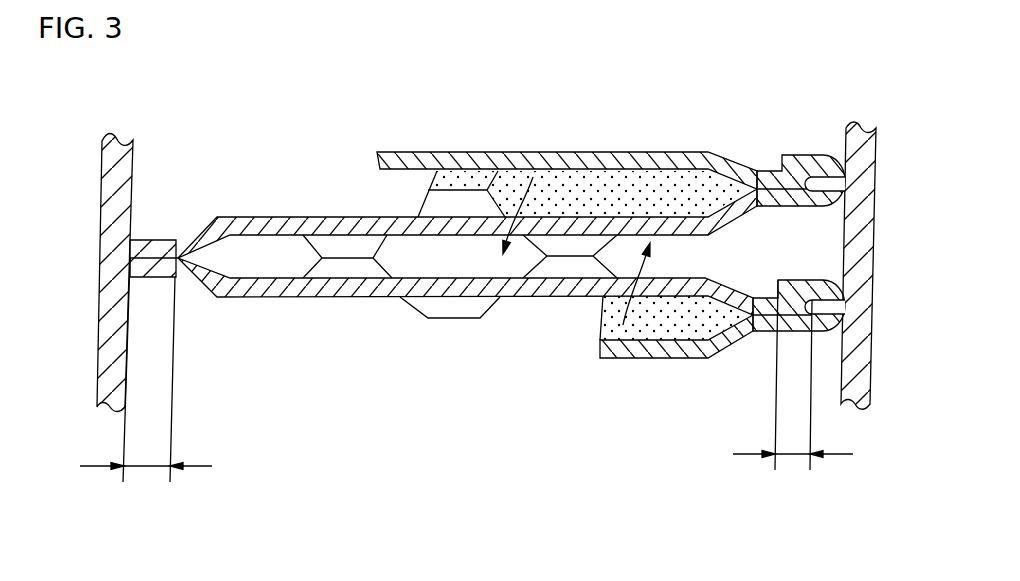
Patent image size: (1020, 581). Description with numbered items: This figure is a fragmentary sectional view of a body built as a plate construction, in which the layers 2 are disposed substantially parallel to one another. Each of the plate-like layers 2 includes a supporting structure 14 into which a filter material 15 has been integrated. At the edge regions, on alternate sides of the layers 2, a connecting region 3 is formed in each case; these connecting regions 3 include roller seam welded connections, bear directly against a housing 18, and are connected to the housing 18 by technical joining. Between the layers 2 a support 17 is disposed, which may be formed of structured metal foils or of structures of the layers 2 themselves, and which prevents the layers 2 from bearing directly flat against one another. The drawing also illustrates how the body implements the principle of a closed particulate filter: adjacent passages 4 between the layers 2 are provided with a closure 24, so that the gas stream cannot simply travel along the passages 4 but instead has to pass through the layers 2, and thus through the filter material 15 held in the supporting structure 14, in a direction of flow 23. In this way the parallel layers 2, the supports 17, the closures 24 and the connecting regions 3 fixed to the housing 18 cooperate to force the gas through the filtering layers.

The layer 2 is at (440, 158).
The connecting region 3 is at (150, 465).
The passage 4 is at (232, 245).
The supporting structure 14 is at (333, 220).
The filter material 15 is at (465, 286).
The support 17 is at (314, 270).
The housing 18 is at (863, 190).
The direction of flow 23 is at (630, 313).
The closure 24 is at (578, 184).